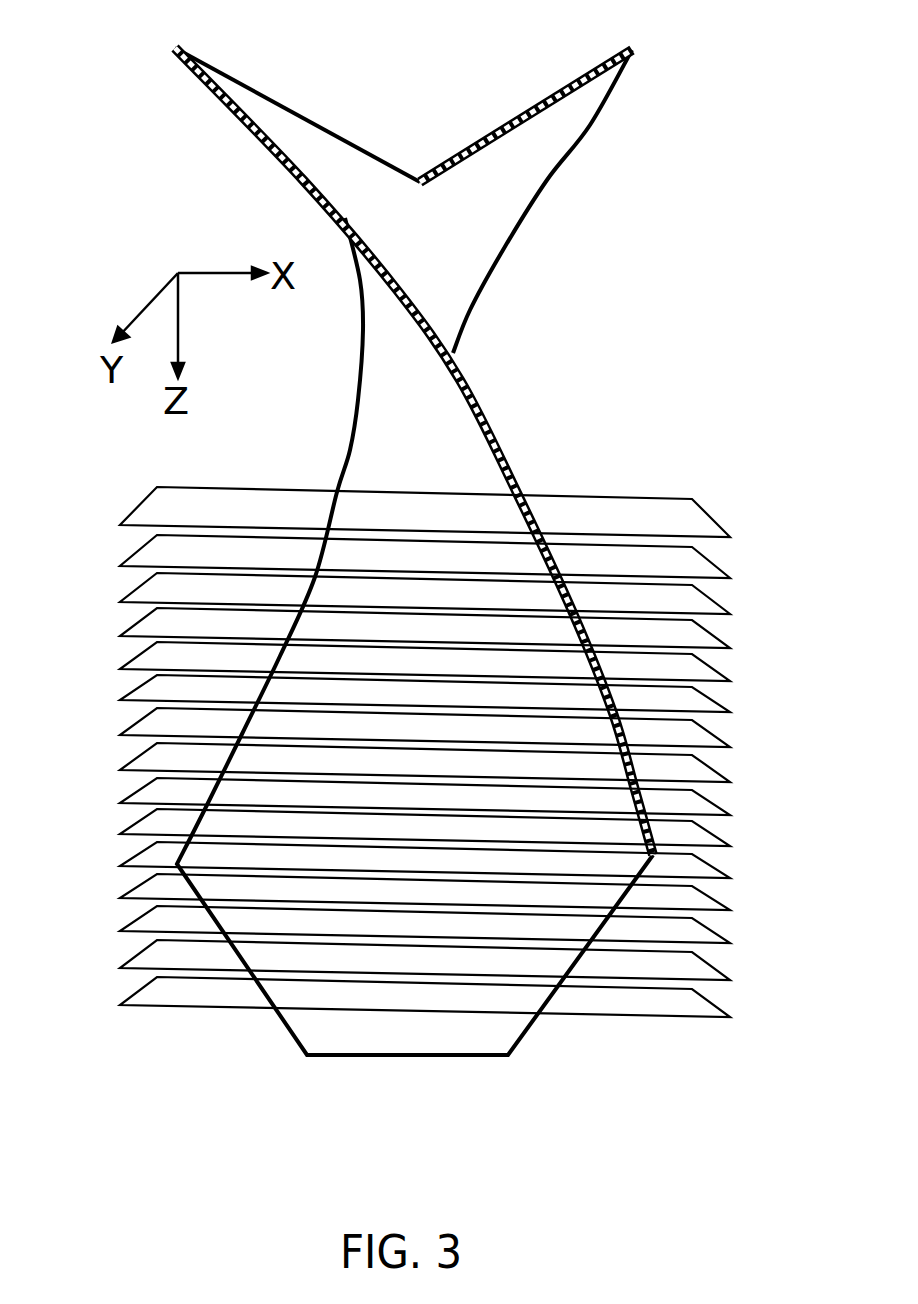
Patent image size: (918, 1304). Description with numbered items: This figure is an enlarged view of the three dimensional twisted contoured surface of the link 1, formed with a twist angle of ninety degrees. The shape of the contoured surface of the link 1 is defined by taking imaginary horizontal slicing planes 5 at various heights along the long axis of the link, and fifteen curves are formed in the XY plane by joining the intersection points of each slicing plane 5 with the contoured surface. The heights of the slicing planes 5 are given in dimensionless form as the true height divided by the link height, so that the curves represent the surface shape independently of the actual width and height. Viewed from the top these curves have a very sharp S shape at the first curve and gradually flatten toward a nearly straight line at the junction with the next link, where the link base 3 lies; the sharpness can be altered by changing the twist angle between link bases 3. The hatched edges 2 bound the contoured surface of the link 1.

The link 1 is at (475, 265).
The free edges 2 is at (502, 112).
The link base 3 is at (382, 1058).
The slicing plane 5 is at (627, 603).